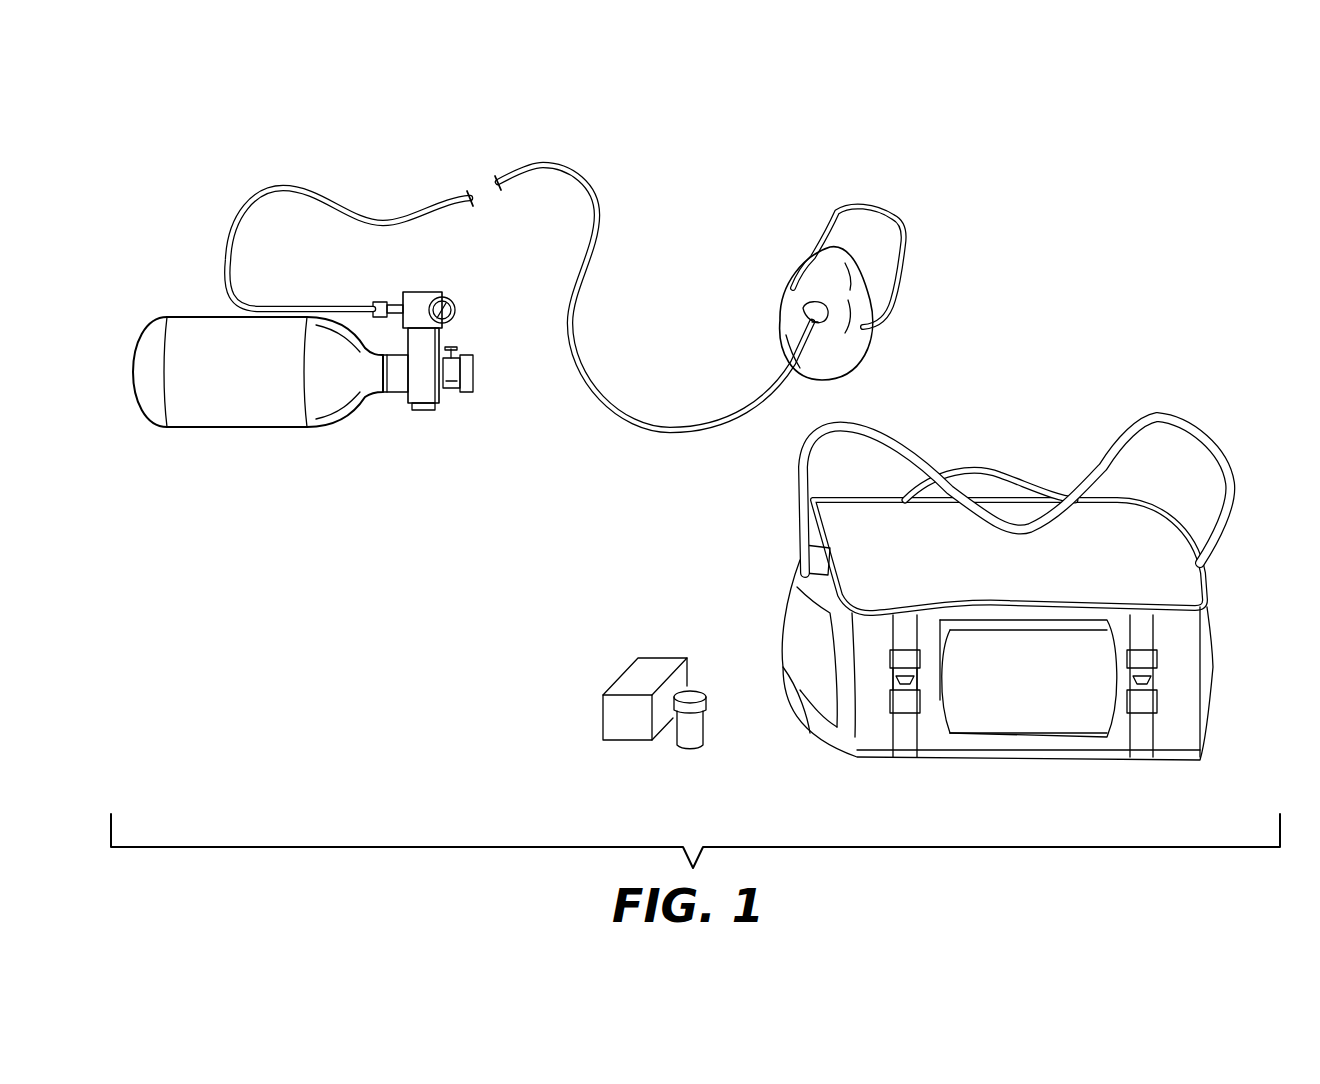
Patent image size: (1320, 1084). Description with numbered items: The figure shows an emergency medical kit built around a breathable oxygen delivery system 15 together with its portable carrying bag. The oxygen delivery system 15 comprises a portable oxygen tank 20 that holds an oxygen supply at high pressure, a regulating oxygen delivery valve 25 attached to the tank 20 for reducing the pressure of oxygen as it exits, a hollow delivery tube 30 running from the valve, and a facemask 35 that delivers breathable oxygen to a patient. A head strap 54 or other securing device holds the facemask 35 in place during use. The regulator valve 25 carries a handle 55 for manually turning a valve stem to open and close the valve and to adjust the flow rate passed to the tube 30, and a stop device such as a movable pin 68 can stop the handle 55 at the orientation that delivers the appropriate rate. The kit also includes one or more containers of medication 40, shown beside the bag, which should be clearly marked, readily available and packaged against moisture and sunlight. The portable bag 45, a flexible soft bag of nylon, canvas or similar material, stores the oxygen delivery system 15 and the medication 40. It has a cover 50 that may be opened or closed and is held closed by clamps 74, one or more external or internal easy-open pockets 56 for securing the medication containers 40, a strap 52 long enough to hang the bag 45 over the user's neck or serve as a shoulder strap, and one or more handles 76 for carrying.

The breathable oxygen delivery system 15 is at (197, 272).
The portable oxygen tank 20 is at (252, 386).
The regulating oxygen delivery valve 25 is at (438, 397).
The hollow delivery tube 30 is at (413, 217).
The facemask 35 is at (850, 342).
The containers of medication 40 is at (680, 650).
The portable bag 45 is at (1060, 438).
The cover 50 is at (1172, 567).
The strap 52 is at (1160, 422).
The head strap 54 is at (893, 218).
The handle 55 is at (473, 370).
The pockets 56 is at (1056, 697).
The movable pin 68 is at (457, 348).
The clamps 74 is at (908, 671).
The handles 76 is at (998, 478).